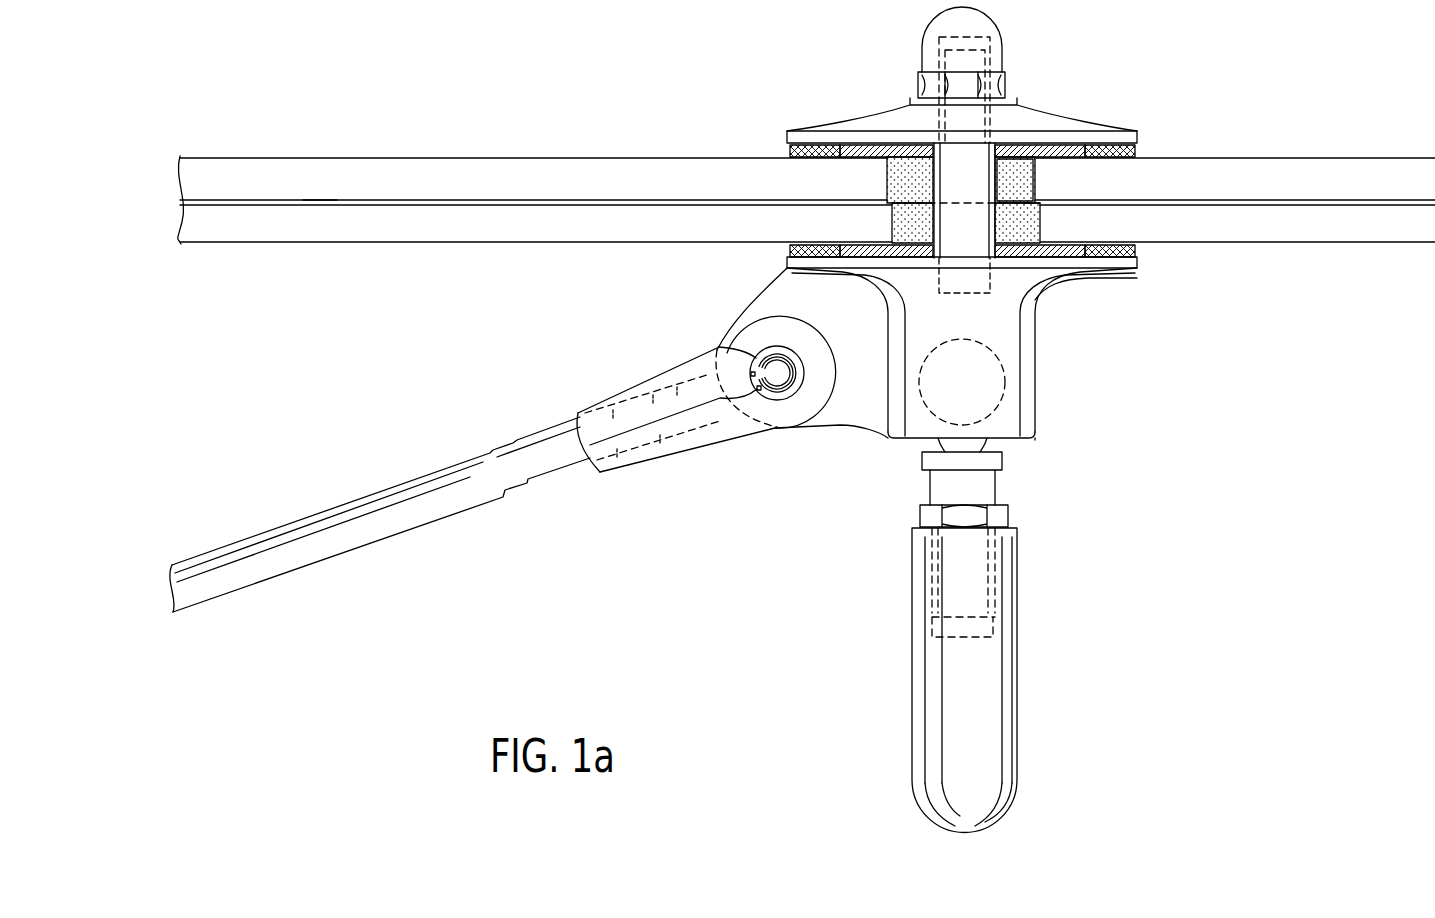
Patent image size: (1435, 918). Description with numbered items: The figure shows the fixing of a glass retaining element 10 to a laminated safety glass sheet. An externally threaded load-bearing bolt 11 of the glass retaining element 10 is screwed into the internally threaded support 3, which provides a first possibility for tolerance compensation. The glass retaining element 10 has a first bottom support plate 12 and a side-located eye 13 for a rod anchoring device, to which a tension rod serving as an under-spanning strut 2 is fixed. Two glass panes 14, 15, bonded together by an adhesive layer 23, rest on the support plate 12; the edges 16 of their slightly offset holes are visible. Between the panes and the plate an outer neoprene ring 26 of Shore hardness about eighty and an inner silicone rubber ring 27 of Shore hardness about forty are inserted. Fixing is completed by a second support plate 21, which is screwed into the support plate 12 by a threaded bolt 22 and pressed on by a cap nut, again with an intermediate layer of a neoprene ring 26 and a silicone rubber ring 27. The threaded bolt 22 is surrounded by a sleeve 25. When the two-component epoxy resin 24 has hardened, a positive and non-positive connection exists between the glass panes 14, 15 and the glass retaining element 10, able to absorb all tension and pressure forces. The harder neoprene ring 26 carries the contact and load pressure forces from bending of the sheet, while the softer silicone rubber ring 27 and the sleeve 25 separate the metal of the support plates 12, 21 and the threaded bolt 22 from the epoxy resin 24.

The under-spanning strut 2 is at (317, 535).
The internally threaded support 3 is at (1000, 703).
The glass retaining element 10 is at (1038, 407).
The load-bearing bolt 11 is at (978, 490).
The first bottom support plate 12 is at (787, 265).
The side-located eye 13 is at (867, 413).
The glass pane 14 is at (268, 170).
The glass pane 15 is at (284, 222).
The edges of the slightly offset holes 16 is at (1040, 227).
The second support plate 21 is at (800, 133).
The threaded bolt 22 is at (975, 232).
The adhesive layer 23 is at (337, 200).
The two-component epoxy resin 24 is at (1012, 177).
The sleeve 25 is at (1005, 248).
The outer neoprene ring 26 is at (793, 148).
The inner silicone rubber ring 27 is at (905, 146).